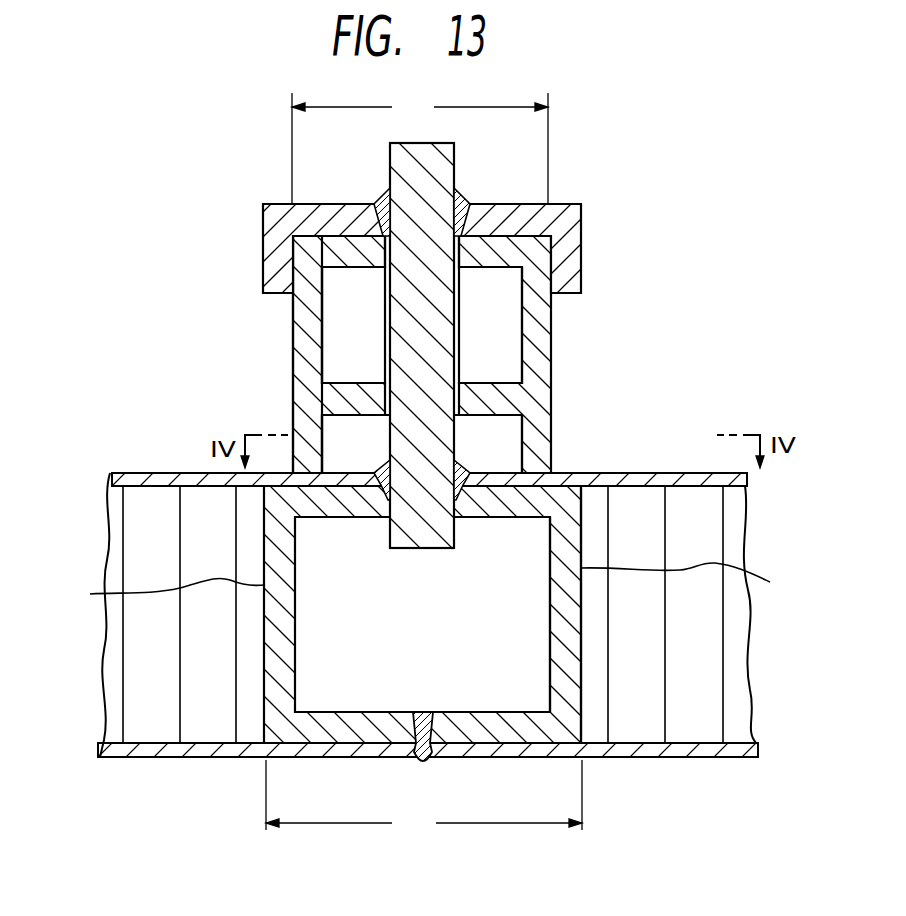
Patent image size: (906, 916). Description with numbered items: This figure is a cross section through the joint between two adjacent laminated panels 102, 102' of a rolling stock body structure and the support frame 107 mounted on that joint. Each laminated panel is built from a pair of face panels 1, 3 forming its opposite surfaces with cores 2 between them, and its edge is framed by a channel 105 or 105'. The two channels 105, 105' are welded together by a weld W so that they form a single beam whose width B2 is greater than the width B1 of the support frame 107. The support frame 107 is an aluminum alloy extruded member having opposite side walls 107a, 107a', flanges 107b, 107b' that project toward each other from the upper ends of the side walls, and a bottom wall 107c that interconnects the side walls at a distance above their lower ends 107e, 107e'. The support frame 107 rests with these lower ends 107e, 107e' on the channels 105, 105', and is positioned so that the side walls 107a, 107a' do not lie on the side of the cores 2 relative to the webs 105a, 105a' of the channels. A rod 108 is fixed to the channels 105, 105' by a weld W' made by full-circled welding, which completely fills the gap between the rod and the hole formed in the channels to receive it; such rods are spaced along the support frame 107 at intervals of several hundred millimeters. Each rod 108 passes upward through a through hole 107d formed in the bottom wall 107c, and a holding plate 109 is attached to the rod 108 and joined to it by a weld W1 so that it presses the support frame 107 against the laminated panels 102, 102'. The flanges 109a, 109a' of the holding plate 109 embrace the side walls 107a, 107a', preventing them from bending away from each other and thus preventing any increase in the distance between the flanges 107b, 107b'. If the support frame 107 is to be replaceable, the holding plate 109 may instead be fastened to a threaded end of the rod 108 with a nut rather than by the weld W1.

The face panel 1 is at (405, 583).
The face panel 3 is at (405, 583).
The core 2 is at (181, 699).
The laminated panel 102 is at (399, 449).
The laminated panel 102' is at (428, 583).
The channel 105 is at (422, 536).
The channel 105' is at (524, 614).
The web 105a is at (150, 598).
The web 105a' is at (693, 588).
The support frame 107 is at (285, 339).
The side wall 107a is at (263, 354).
The side wall 107a' is at (544, 343).
The flange 107b is at (353, 280).
The flange 107b' is at (490, 280).
The bottom wall 107c is at (482, 383).
The through hole 107d is at (386, 374).
The lower end 107e is at (346, 444).
The lower end 107e' is at (533, 438).
The rod 108 is at (389, 170).
The holding plate 109 is at (419, 238).
The flange 109a is at (275, 238).
The flange 109a' is at (566, 230).
The weld W is at (449, 746).
The weld W1 is at (460, 195).
The weld W' is at (434, 468).
The width of the support frame B1 is at (420, 147).
The width of the beam B2 is at (424, 799).